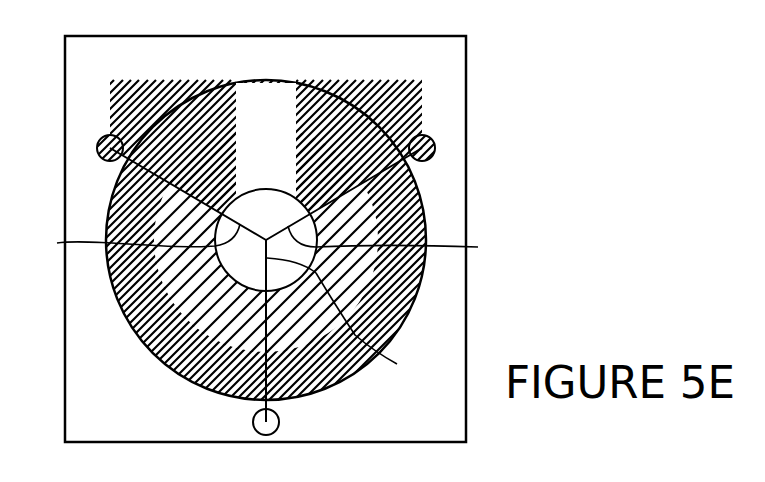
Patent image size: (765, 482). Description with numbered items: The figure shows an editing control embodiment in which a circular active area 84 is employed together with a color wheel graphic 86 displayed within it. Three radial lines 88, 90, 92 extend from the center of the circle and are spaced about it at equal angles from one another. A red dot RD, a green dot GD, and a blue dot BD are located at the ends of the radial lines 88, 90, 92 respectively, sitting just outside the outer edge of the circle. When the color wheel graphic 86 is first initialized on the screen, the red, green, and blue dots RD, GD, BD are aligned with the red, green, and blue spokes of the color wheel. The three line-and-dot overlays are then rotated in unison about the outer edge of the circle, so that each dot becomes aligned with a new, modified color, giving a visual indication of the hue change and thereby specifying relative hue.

The circular active area 84 is at (353, 100).
The color wheel graphic 86 is at (260, 104).
The radial line 88 is at (135, 242).
The radial line 90 is at (346, 320).
The radial line 92 is at (398, 244).
The red dot RD is at (107, 136).
The blue dot BD is at (416, 136).
The green dot GD is at (280, 421).